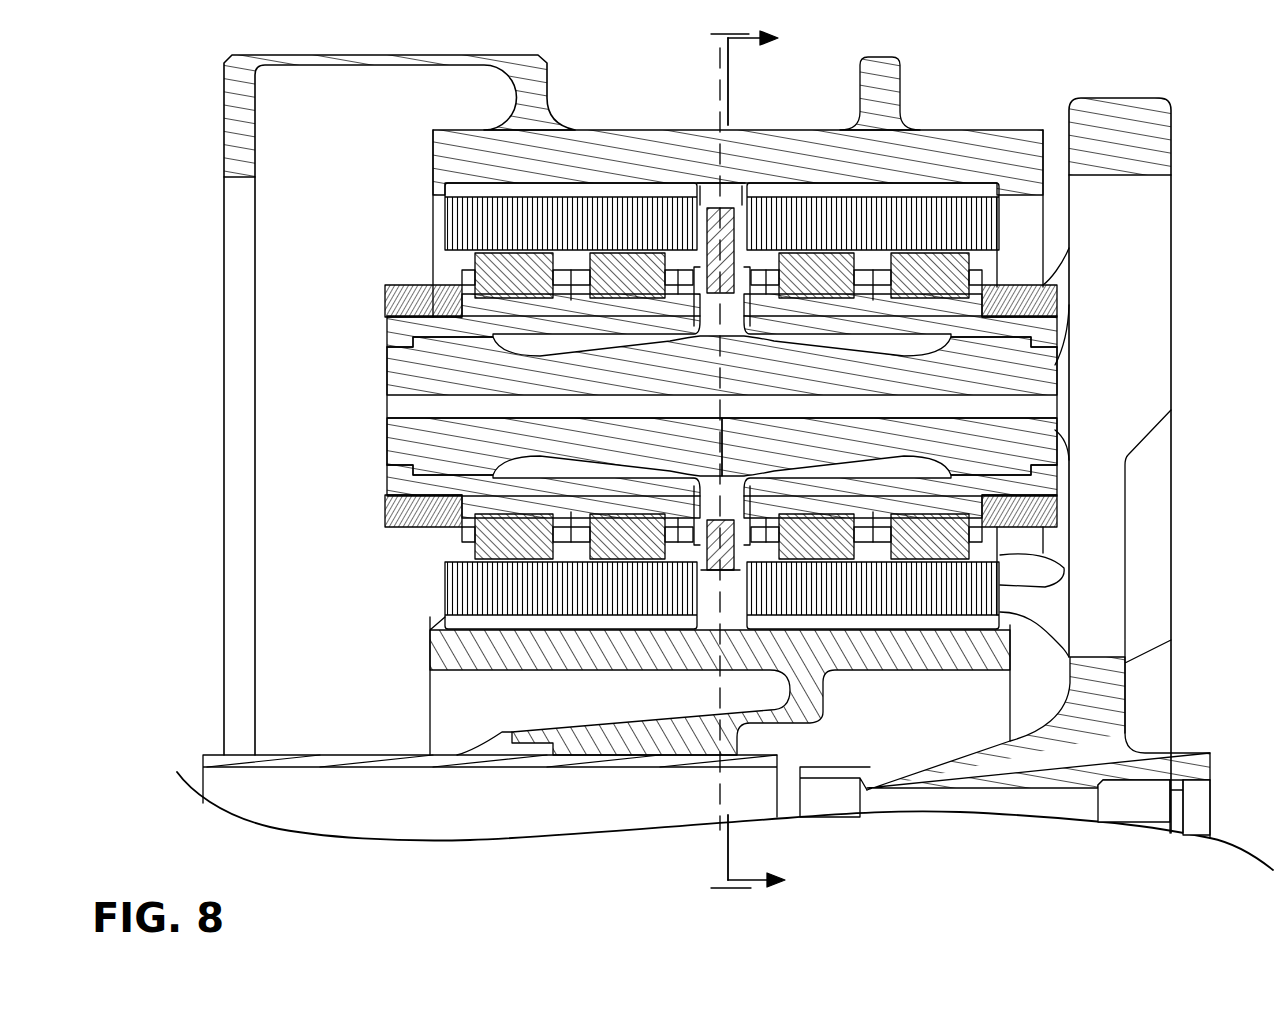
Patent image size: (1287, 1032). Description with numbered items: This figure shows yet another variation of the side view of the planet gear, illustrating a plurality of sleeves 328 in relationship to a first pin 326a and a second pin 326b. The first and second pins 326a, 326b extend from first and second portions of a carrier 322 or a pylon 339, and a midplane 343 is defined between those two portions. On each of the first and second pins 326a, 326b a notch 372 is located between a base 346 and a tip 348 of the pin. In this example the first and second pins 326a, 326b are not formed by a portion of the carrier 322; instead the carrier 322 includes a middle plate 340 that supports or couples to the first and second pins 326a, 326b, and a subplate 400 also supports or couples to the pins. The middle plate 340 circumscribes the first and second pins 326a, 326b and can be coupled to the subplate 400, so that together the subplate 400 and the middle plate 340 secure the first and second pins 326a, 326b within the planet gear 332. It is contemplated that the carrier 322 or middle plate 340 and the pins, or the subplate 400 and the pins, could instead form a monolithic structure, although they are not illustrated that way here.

The carrier 322 is at (1166, 98).
The first pin 326a is at (385, 430).
The second pin 326b is at (1067, 447).
The sleeves 328 is at (383, 480).
The planet gear 332 is at (385, 296).
The pylon 339 is at (1071, 289).
The middle plate 340 is at (733, 576).
The midplane 343 is at (720, 96).
The base 346 is at (707, 208).
The tip 348 is at (383, 368).
The notch 372 is at (827, 323).
The subplate 400 is at (733, 200).